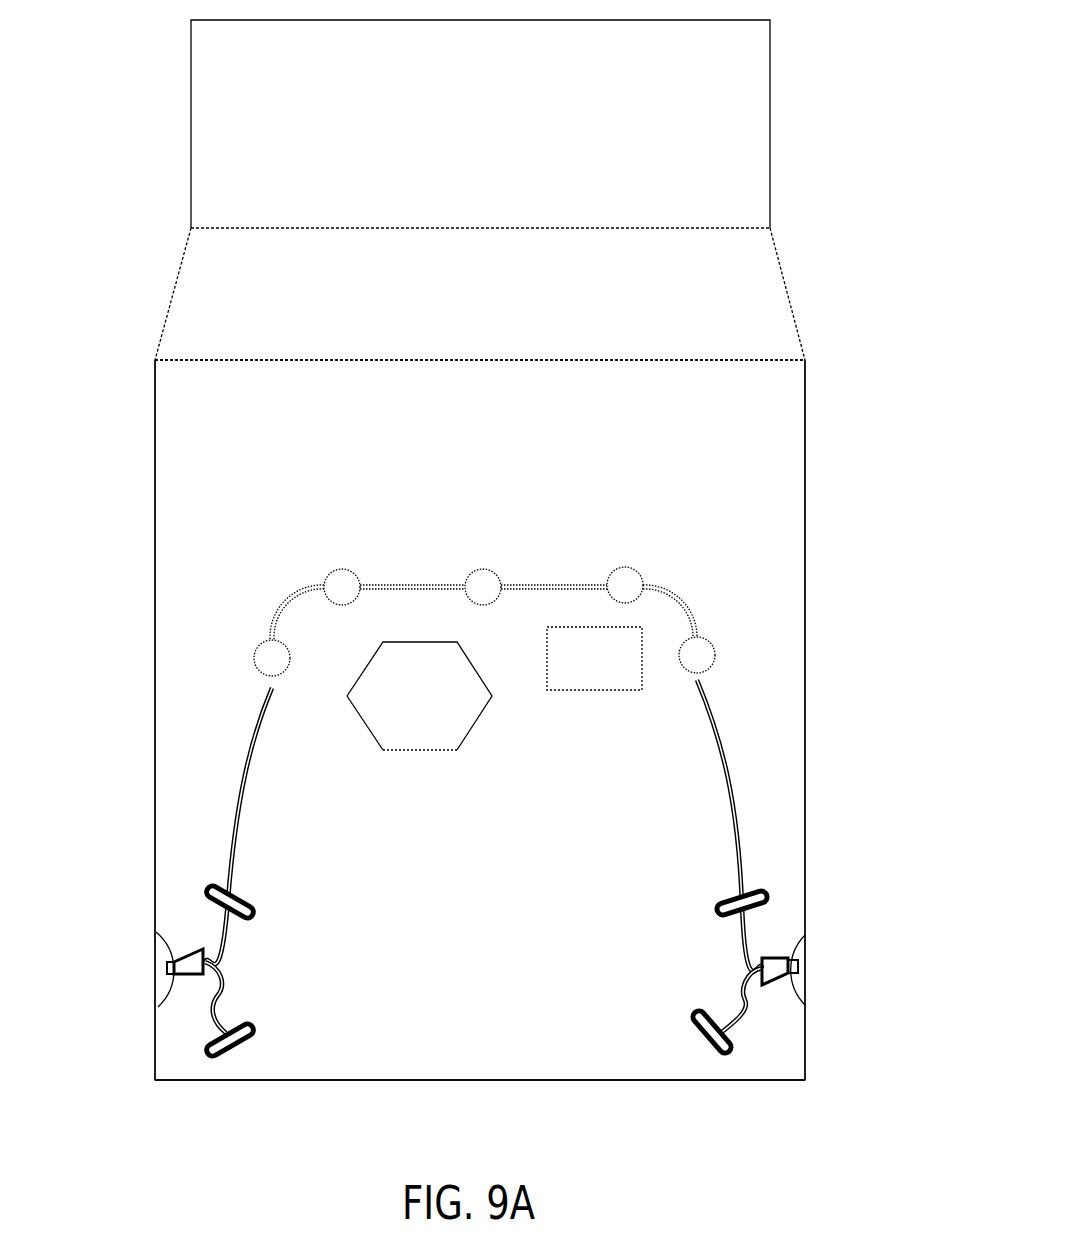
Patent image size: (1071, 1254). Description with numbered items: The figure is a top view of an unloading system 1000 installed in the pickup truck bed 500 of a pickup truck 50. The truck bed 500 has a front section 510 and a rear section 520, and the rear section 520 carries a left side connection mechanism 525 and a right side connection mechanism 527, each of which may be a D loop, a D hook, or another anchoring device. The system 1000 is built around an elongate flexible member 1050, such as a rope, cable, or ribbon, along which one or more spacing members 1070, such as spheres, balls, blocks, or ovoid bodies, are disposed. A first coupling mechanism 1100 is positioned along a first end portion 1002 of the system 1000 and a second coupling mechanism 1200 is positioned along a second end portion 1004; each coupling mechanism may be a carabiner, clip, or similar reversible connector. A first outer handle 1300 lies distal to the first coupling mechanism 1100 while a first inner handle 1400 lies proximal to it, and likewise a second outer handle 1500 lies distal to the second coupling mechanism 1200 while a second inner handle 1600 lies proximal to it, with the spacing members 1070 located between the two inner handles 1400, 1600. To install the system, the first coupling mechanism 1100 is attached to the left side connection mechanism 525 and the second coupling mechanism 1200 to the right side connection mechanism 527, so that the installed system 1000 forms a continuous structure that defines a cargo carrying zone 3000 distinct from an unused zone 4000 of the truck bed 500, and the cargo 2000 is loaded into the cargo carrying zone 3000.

The pickup truck 50 is at (818, 88).
The pickup truck bed 500 is at (222, 409).
The front section 510 is at (142, 427).
The rear section 520 is at (839, 1069).
The unused zone 4000 is at (507, 425).
The cargo carrying zone 3000 is at (497, 1014).
The cargo 2000 is at (450, 710).
The unloading system 1000 is at (397, 527).
The spacing member 1070 is at (642, 554).
The elongate flexible member 1050 is at (211, 807).
The first end portion 1002 is at (284, 952).
The second end portion 1004 is at (667, 967).
The first inner handle 1400 is at (256, 892).
The first outer handle 1300 is at (249, 1053).
The second inner handle 1600 is at (706, 899).
The second outer handle 1500 is at (687, 1037).
The first coupling mechanism 1100 is at (186, 942).
The second coupling mechanism 1200 is at (768, 991).
The left side connection mechanism 525 is at (169, 1005).
The right side connection mechanism 527 is at (788, 917).